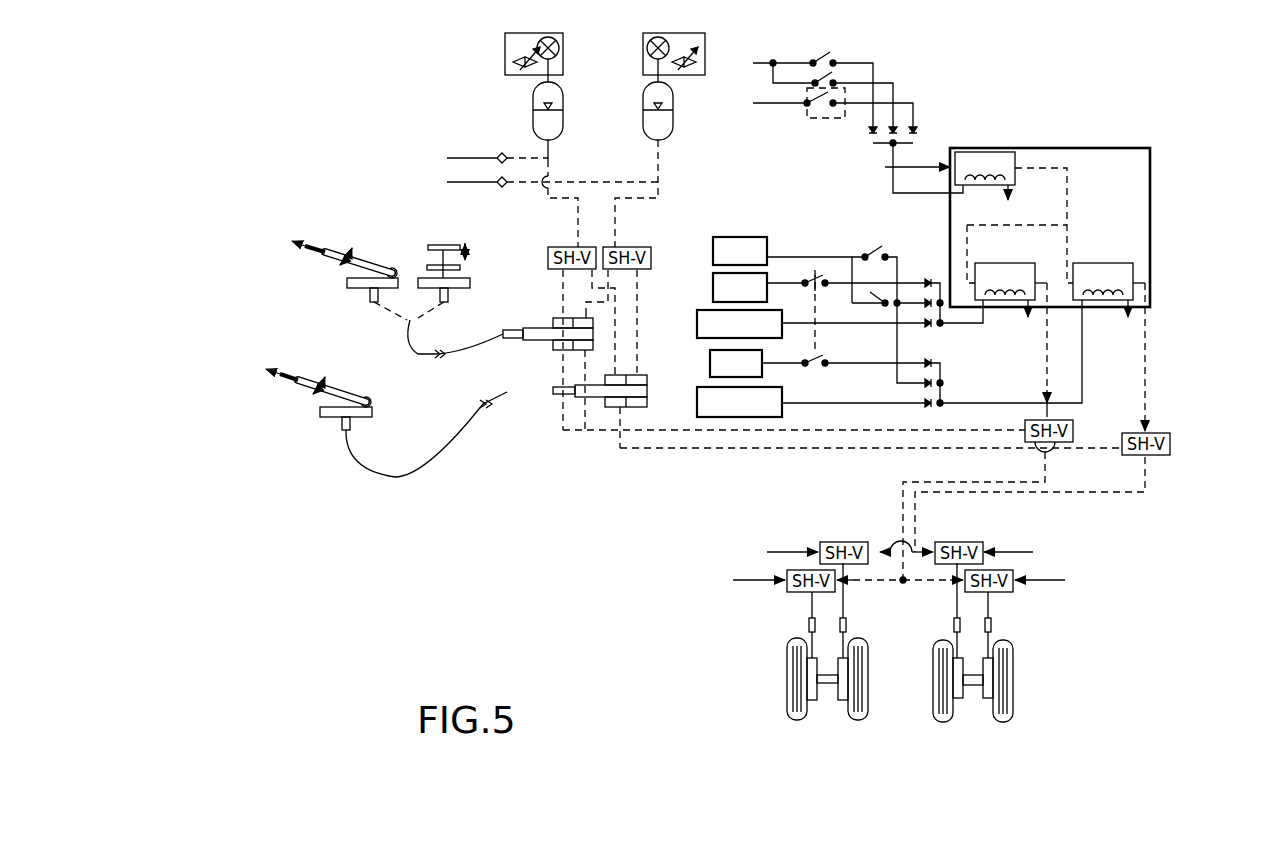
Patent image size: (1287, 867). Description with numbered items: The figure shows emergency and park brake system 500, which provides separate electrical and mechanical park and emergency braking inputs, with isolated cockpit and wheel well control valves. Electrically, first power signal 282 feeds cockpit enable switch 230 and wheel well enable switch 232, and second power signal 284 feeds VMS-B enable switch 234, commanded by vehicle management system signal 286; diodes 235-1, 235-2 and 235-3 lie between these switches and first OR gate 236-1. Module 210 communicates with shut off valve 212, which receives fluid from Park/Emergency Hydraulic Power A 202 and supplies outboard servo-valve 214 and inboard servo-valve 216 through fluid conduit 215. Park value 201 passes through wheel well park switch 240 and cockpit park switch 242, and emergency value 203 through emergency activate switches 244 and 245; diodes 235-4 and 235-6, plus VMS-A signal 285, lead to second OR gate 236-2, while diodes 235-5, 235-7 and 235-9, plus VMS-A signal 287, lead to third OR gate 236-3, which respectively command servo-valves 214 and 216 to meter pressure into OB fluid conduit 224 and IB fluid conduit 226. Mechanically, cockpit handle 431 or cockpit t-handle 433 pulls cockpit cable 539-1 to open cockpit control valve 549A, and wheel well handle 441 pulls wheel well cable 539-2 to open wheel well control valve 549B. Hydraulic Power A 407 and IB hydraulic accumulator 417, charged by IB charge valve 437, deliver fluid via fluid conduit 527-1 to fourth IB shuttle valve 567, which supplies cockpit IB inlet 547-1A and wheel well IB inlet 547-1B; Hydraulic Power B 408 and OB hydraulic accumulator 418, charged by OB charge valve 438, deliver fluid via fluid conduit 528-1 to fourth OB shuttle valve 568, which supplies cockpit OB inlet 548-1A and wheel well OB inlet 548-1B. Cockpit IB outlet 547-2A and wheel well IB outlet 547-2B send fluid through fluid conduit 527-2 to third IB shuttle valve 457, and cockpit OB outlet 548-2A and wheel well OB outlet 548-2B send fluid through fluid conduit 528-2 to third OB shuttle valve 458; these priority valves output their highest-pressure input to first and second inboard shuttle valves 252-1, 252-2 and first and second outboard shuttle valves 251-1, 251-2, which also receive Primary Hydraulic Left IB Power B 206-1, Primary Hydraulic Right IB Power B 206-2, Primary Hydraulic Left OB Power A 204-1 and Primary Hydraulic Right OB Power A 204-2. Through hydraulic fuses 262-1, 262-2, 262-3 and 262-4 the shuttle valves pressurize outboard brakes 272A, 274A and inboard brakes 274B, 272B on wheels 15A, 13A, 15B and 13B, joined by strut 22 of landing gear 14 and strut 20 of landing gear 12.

The IB charge valve 437 is at (505, 62).
The OB charge valve 438 is at (643, 64).
The IB hydraulic accumulator 417 is at (533, 112).
The OB hydraulic accumulator 418 is at (643, 126).
The Hydraulic Power A 407 is at (482, 160).
The Hydraulic Power B 408 is at (537, 184).
The fluid conduit 527-1 is at (578, 205).
The fluid conduit 528-1 is at (615, 217).
The fourth IB shuttle valve 567 is at (548, 255).
The fourth OB shuttle valve 568 is at (655, 258).
The cockpit OB inlet 548-1A is at (578, 320).
The cockpit IB inlet 547-1A is at (553, 324).
The cockpit OB outlet 548-2A is at (595, 346).
The cockpit control valve 549A is at (523, 337).
The cockpit IB outlet 547-2A is at (555, 346).
The wheel well control valve 549B is at (575, 390).
The wheel well IB inlet 547-1B is at (612, 384).
The wheel well IB outlet 547-2B is at (615, 404).
The wheel well OB outlet 548-2B is at (640, 408).
The wheel well OB inlet 548-1B is at (630, 407).
The cockpit handle 431 is at (333, 290).
The cockpit t-handle 433 is at (418, 262).
The wheel well handle 441 is at (312, 410).
The cockpit cable 539-1 is at (418, 356).
The wheel well cable 539-2 is at (410, 477).
The first power signal 282 is at (767, 65).
The second power signal 284 is at (764, 105).
The cockpit enable switch 230 is at (833, 57).
The wheel well enable switch 232 is at (840, 81).
The VMS-B enable switch 234 is at (810, 102).
The diode 235-3 is at (913, 125).
The diode 235-2 is at (915, 131).
The diode 235-1 is at (870, 134).
The Park/Emergency Hydraulic Power A 202 is at (902, 168).
The first OR gate 236-1 is at (893, 150).
The emergency and park brake system 500 is at (1188, 110).
The module 210 is at (1103, 148).
The shut off valve 212 is at (993, 152).
The fluid conduit 215 is at (1067, 203).
The outboard servo-valve 214 is at (1005, 263).
The inboard servo-valve 216 is at (1103, 263).
The park value 201 is at (782, 270).
The emergency value 203 is at (757, 325).
The vehicle management system signal 286 is at (697, 396).
The wheel well park switch 240 is at (872, 257).
The emergency activate switch 244 is at (806, 277).
The VMS-A signal 285 is at (830, 325).
The cockpit park switch 242 is at (878, 306).
The emergency activate switch 245 is at (815, 358).
The VMS-A signal 287 is at (813, 403).
The diode 235-6 is at (924, 280).
The diode 235-4 is at (933, 280).
The second OR gate 236-2 is at (945, 325).
The diode 235-7 is at (935, 363).
The diode 235-5 is at (922, 385).
The third OR gate 236-3 is at (945, 400).
The diode 235-9 is at (928, 406).
The OB fluid conduit 224 is at (1047, 360).
The IB fluid conduit 226 is at (1145, 373).
The third OB shuttle valve 458 is at (1068, 442).
The third IB shuttle valve 457 is at (1170, 445).
The fluid conduit 527-2 is at (762, 432).
The fluid conduit 528-2 is at (815, 449).
The first inboard shuttle valve 252-1 is at (840, 542).
The second inboard shuttle valve 252-2 is at (950, 542).
The Primary Hydraulic Left OB Power A 204-1 is at (795, 582).
The Primary Hydraulic Right OB Power A 204-2 is at (1009, 582).
The Primary Hydraulic Left IB Power B 206-1 is at (768, 553).
The Primary Hydraulic Right IB Power B 206-2 is at (1033, 553).
The first outboard shuttle valve 251-1 is at (790, 592).
The second outboard shuttle valve 251-2 is at (1013, 590).
The hydraulic fuse 262-1 is at (809, 625).
The hydraulic fuse 262-3 is at (846, 625).
The hydraulic fuse 262-4 is at (955, 620).
The hydraulic fuse 262-2 is at (991, 625).
The landing gear 14 is at (775, 708).
The landing gear 12 is at (1030, 722).
The wheel 15A is at (787, 675).
The wheel 15B is at (866, 705).
The wheel 13A is at (1014, 665).
The wheel 13B is at (933, 660).
The outboard brake 272A is at (812, 696).
The inboard brake 274B is at (843, 700).
The inboard brake 272B is at (958, 698).
The outboard brake 274A is at (988, 700).
The strut 22 is at (826, 675).
The strut 20 is at (973, 675).